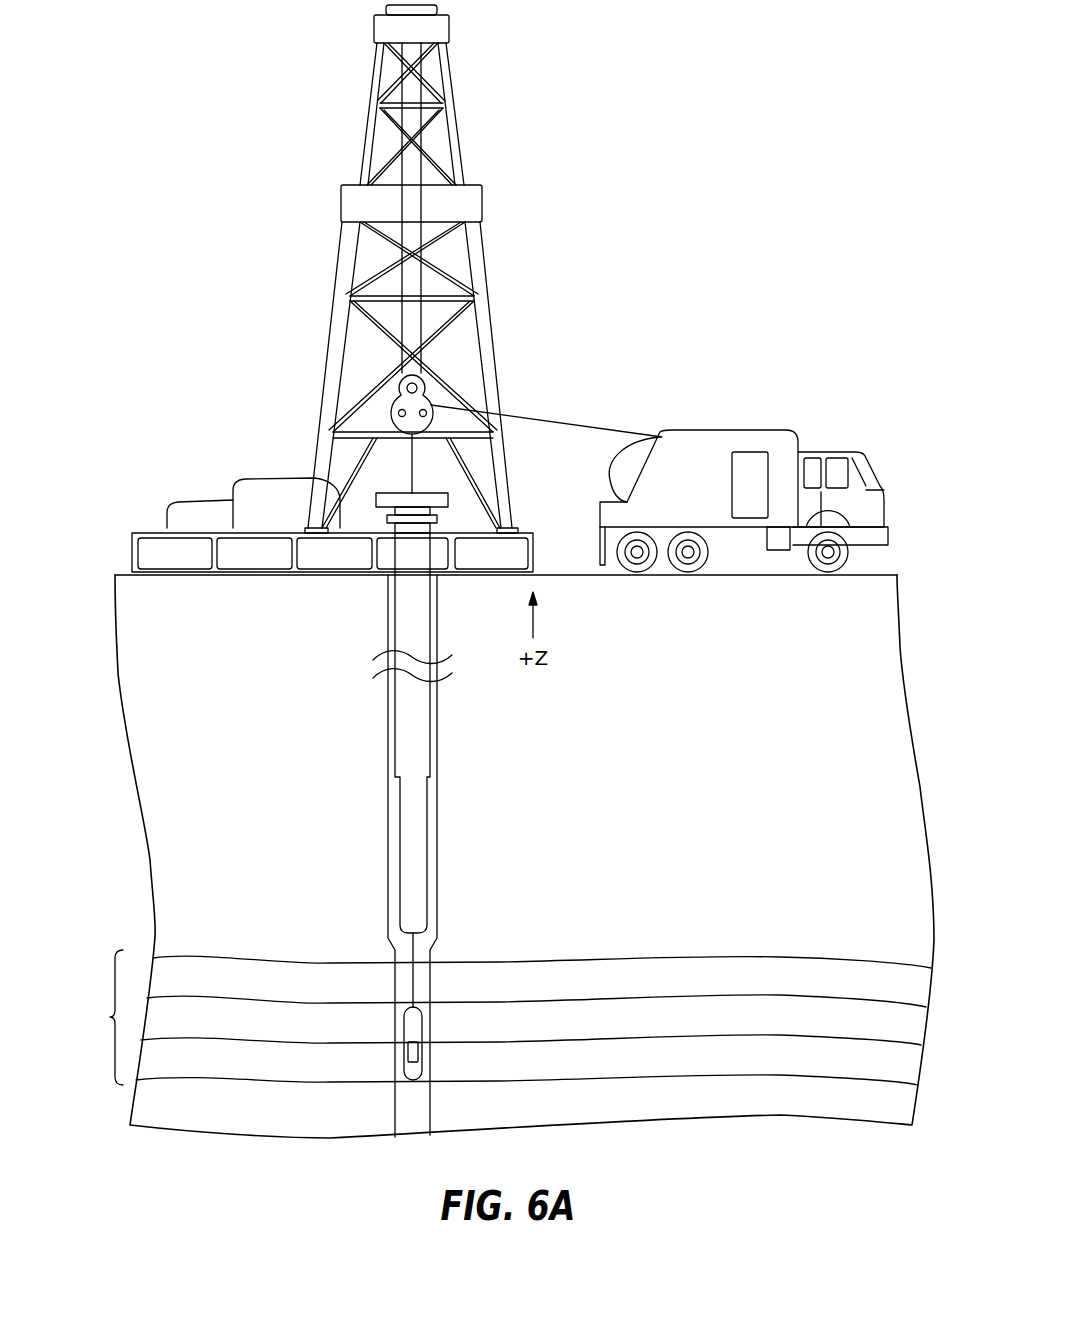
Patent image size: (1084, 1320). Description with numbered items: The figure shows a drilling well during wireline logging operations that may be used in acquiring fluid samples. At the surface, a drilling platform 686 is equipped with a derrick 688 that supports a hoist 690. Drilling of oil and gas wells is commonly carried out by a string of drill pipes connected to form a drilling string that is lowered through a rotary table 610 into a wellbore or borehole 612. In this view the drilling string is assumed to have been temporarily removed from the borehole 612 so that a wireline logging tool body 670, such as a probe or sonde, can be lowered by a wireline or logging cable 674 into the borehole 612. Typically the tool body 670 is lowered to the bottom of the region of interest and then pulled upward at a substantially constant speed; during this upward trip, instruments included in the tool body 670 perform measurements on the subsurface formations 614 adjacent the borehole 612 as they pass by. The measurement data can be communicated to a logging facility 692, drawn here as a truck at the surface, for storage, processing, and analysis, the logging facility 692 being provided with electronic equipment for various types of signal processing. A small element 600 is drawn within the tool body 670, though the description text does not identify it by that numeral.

The sensor device 600 is at (418, 1052).
The rotary table 610 is at (426, 493).
The wellbore or borehole 612 is at (393, 987).
The subsurface formations 614 is at (108, 1017).
The wireline logging tool body 670 is at (424, 1033).
The wireline or logging cable 674 is at (580, 426).
The drilling platform 686 is at (534, 555).
The derrick 688 is at (509, 497).
The hoist 690 is at (392, 398).
The logging facility 692 is at (737, 430).